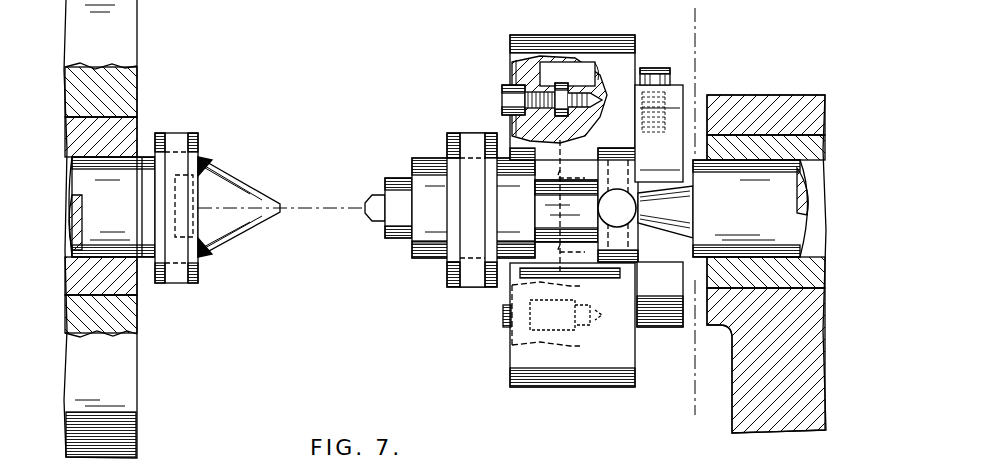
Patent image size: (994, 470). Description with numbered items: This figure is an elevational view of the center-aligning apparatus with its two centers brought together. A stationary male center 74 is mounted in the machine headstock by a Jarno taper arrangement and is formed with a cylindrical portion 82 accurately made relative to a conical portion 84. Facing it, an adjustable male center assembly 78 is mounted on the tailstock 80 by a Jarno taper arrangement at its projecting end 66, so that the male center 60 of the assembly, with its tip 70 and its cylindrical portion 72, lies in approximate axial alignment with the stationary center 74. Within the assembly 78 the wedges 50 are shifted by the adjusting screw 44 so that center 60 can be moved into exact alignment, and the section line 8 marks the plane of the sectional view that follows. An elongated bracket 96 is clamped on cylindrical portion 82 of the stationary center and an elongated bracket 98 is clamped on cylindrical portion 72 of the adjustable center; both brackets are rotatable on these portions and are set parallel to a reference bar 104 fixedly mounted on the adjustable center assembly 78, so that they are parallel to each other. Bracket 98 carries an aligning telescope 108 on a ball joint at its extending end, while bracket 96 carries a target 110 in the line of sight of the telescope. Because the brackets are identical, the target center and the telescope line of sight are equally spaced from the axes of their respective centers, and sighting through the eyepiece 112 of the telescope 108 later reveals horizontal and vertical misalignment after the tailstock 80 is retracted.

The section line 8- 8 is at (695, 8).
The adjusting screw 44 is at (503, 93).
The wedges 50 is at (512, 68).
The male center 60 is at (425, 152).
The projecting end 66 is at (772, 214).
The tip of male center 70 is at (383, 197).
The cylindrical portion 72 is at (452, 287).
The stationary male center 74 is at (224, 158).
The adjustable male center assembly 78 is at (473, 73).
The tailstock 80 is at (763, 98).
The cylindrical portion 82 is at (145, 263).
The conical portion 84 is at (244, 184).
The elongated bracket 96 is at (172, 133).
The elongated bracket 98 is at (470, 133).
The reference bar 104 is at (677, 90).
The aligning telescope 108 is at (425, 250).
The target 110 is at (205, 230).
The eyepiece 112 is at (663, 195).